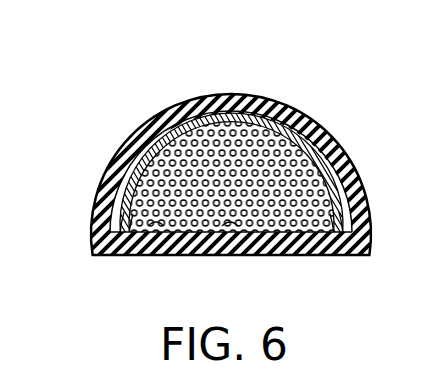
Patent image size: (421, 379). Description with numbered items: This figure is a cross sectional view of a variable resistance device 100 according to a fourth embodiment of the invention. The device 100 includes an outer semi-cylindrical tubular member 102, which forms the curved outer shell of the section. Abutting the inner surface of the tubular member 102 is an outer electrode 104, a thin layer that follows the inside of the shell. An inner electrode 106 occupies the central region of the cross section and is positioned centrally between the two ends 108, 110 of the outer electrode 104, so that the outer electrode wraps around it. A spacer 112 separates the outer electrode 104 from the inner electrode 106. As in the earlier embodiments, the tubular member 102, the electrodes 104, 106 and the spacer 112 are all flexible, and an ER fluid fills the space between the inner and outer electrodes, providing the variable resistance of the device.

The resistance device 100 is at (157, 103).
The outer semi-cylindrical tubular member 102 is at (110, 177).
The outer electrode 104 is at (140, 152).
The inner electrode 106 is at (230, 224).
The end of the outer electrode 108 is at (122, 235).
The end of the outer electrode 110 is at (343, 240).
The spacer 112 is at (160, 223).